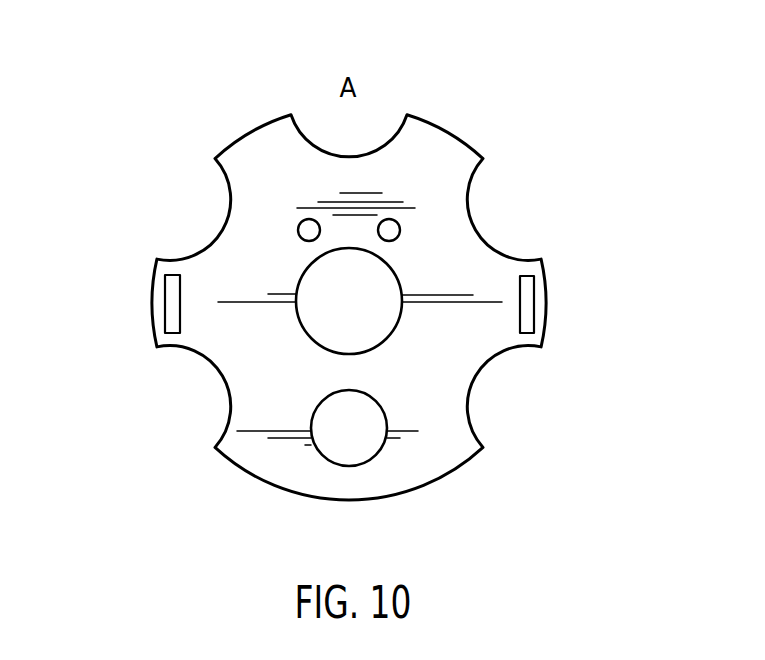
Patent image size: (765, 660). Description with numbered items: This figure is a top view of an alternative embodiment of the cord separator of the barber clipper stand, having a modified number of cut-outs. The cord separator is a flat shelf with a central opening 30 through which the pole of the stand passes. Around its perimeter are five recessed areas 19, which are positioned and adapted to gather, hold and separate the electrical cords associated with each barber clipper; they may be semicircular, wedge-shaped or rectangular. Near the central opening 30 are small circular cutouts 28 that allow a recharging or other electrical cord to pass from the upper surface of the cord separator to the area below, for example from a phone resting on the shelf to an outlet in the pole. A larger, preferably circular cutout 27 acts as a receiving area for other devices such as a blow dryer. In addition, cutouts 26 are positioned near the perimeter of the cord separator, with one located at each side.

The recessed areas 19 is at (384, 96).
The cutouts 26 is at (172, 308).
The larger cutout 27 is at (353, 450).
The small circular cutouts 28 is at (309, 219).
The central opening 30 is at (328, 338).